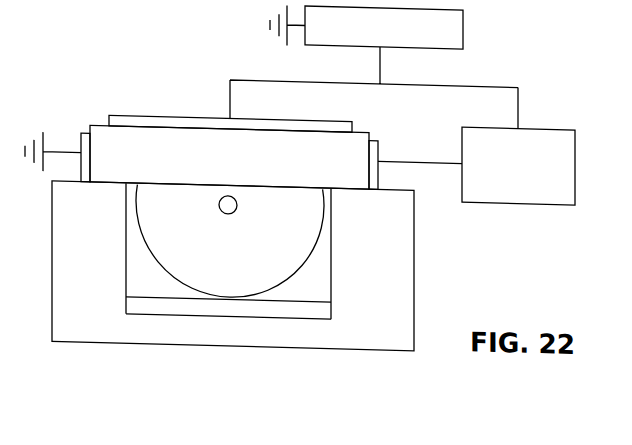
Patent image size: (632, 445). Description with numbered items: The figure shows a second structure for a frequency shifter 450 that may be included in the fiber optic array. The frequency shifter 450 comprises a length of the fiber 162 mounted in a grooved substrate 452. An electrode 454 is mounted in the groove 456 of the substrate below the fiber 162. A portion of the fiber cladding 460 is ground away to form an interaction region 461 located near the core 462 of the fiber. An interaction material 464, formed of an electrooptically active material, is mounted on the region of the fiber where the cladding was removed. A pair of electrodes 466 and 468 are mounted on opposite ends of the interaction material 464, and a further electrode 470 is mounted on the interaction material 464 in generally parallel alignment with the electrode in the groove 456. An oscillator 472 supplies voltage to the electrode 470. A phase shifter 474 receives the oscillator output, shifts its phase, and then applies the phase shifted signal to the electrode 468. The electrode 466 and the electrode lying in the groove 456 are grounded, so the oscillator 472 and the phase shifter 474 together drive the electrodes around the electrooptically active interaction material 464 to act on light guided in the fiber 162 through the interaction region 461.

The frequency shifter 450 is at (463, 382).
The grooved substrate 452 is at (414, 217).
The electrode 454 is at (310, 312).
The groove 456 is at (152, 308).
The fiber cladding 460 is at (148, 246).
The interaction region 461 is at (198, 120).
The core 462 is at (226, 208).
The interaction material 464 is at (296, 112).
The electrode 466 is at (80, 143).
The electrode 468 is at (380, 142).
The electrode 470 is at (147, 111).
The oscillator 472 is at (463, 18).
The phase shifter 474 is at (498, 190).
The fiber 162 is at (283, 265).